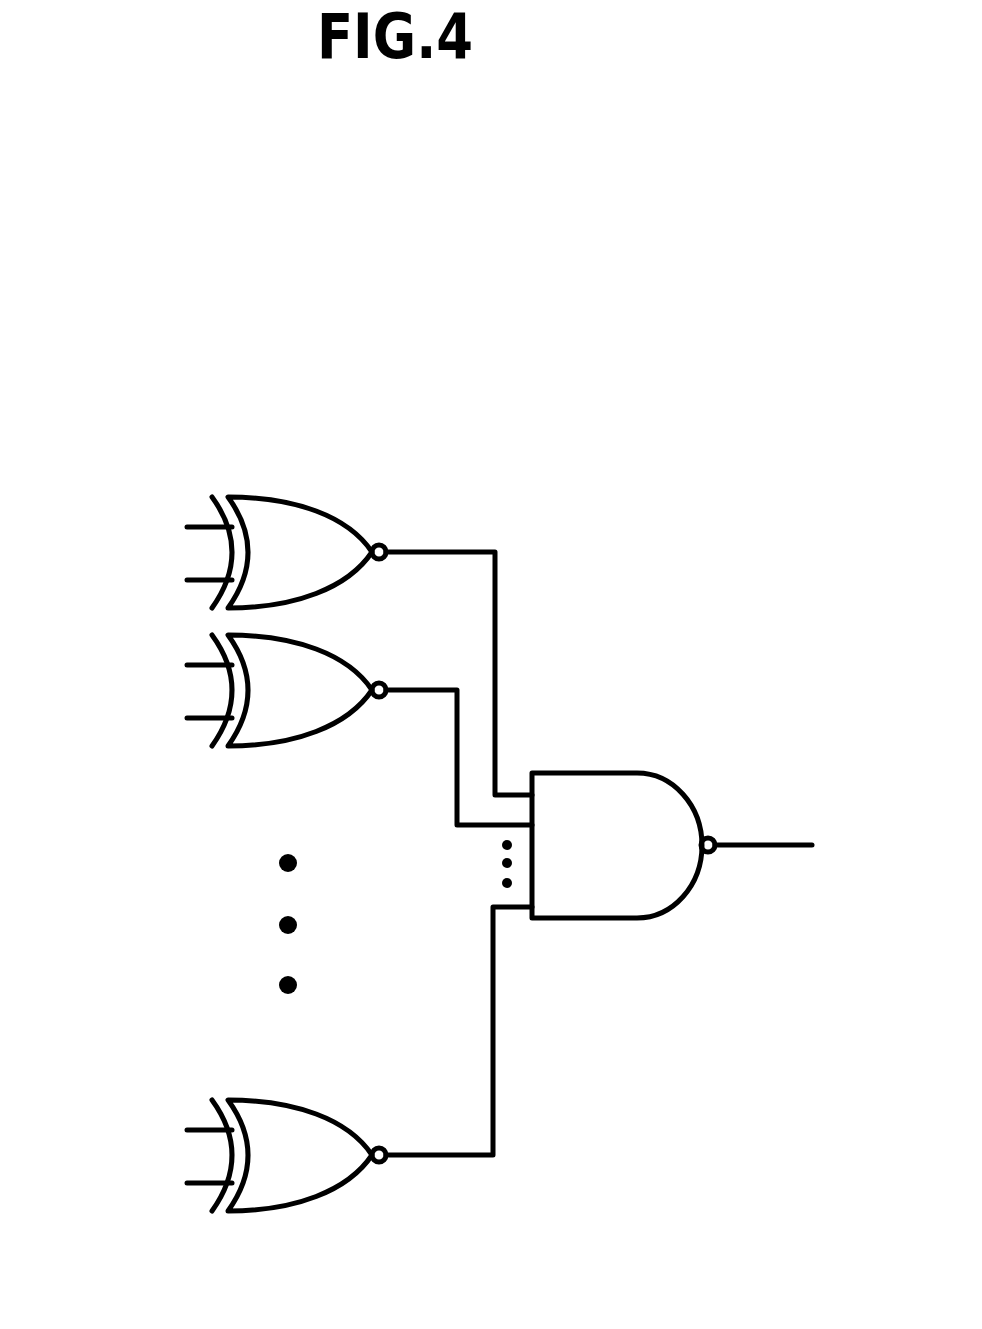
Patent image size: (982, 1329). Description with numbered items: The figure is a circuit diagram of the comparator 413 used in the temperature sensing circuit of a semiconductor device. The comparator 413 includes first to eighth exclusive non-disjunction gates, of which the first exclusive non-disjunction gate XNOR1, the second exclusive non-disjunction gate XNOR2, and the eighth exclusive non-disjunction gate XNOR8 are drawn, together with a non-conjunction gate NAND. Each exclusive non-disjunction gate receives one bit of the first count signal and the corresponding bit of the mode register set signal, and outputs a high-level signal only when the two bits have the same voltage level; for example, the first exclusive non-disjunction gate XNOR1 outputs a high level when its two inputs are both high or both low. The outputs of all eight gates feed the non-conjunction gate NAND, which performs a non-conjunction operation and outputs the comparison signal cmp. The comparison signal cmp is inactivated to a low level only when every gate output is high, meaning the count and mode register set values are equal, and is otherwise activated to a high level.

The comparator 413 is at (745, 565).
The first exclusive non-disjunction gate XNOR1 is at (286, 552).
The second exclusive non-disjunction gate XNOR2 is at (286, 690).
The eighth exclusive non-disjunction gate XNOR8 is at (286, 1155).
The non-conjunction gate NAND is at (623, 845).
The comparison signal cmp is at (798, 850).